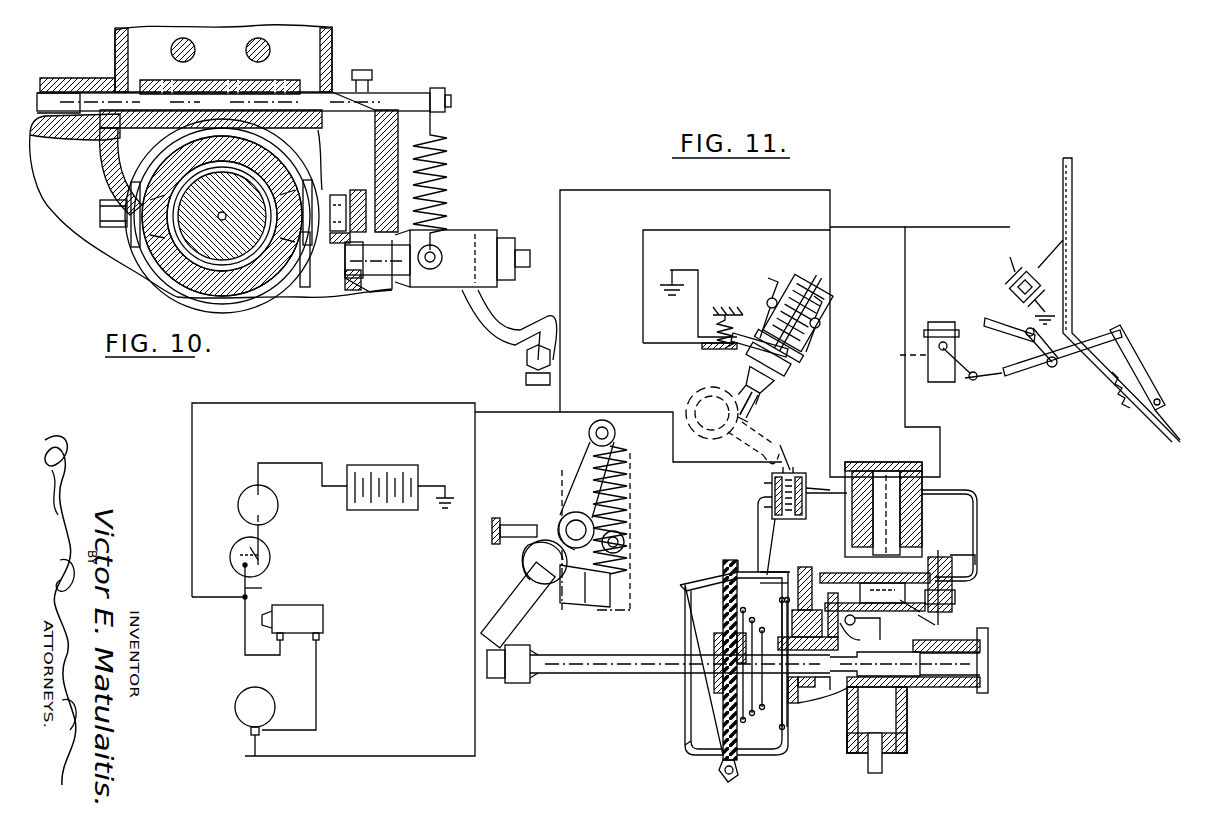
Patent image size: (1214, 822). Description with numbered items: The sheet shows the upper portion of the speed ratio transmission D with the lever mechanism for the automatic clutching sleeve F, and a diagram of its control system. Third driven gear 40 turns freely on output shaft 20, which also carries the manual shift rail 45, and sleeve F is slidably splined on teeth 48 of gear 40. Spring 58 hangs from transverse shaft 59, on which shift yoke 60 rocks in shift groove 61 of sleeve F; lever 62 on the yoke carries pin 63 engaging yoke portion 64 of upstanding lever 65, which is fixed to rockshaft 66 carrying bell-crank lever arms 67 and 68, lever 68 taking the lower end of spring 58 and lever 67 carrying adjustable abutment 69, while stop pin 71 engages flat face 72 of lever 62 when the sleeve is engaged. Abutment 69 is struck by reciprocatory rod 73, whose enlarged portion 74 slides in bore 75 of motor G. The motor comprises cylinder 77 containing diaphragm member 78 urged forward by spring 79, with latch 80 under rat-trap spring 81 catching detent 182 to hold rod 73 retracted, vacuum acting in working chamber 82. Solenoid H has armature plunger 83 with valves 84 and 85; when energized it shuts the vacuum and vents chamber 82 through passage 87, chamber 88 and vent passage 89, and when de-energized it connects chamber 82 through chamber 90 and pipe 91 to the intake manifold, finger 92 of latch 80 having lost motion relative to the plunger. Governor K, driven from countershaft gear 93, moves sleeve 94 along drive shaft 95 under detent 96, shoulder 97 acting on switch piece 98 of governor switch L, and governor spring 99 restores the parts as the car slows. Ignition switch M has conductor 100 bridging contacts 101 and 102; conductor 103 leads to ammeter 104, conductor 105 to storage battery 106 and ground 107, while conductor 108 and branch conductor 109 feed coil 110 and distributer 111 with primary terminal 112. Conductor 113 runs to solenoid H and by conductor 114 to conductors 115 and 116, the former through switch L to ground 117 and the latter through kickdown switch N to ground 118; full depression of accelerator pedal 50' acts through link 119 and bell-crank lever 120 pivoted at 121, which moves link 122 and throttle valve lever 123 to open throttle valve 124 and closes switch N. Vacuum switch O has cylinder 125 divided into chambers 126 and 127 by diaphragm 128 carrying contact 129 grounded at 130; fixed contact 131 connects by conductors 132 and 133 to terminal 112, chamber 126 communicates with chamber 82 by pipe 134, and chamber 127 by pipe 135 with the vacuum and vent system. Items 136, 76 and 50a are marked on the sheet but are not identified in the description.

In FIG. 10, the speed ratio transmission D is at (112, 50).
In FIG. 10, the shift rail 45 is at (262, 50).
In FIG. 10, the transverse shaft 59 is at (396, 92).
In FIG. 11, the transverse shaft 59 is at (616, 431).
In FIG. 10, the teeth 48 is at (228, 142).
In FIG. 10, the shift yoke 60 is at (122, 156).
In FIG. 11, the shift yoke 60 is at (588, 434).
In FIG. 10, the spring 58 is at (452, 149).
In FIG. 11, the spring 58 is at (620, 472).
In FIG. 10, the forwardly extending lever 62 is at (321, 175).
In FIG. 11, the forwardly extending lever 62 is at (583, 495).
In FIG. 10, the lateral pin 63 is at (342, 208).
In FIG. 11, the lateral pin 63 is at (563, 518).
In FIG. 10, the stop pin 71 is at (311, 259).
In FIG. 11, the stop pin 71 is at (512, 525).
In FIG. 10, the upstanding lever 65 is at (342, 282).
In FIG. 11, the upstanding lever 65 is at (522, 552).
In FIG. 10, the third driven gear 40 is at (176, 234).
In FIG. 10, the shift groove 61 is at (190, 252).
In FIG. 10, the automatic clutching sleeve F is at (198, 272).
In FIG. 11, the automatic clutching sleeve F is at (636, 560).
In FIG. 10, the output shaft 20 is at (208, 292).
In FIG. 10, the rockshaft 66 is at (398, 292).
In FIG. 11, the rockshaft 66 is at (575, 598).
In FIG. 10, the lever arm 67 is at (438, 286).
In FIG. 11, the lever arm 67 is at (512, 600).
In FIG. 10, the lever arm 68 is at (508, 344).
In FIG. 11, the lever arm 68 is at (592, 598).
In FIG. 11, the second conductor 113 is at (192, 508).
In FIG. 11, the conductor 133 is at (474, 697).
In FIG. 11, the ammeter 104 is at (242, 497).
In FIG. 11, the conductor 105 is at (298, 445).
In FIG. 11, the storage battery 106 is at (380, 472).
In FIG. 11, the ground 107 is at (445, 515).
In FIG. 11, the ignition switch M is at (240, 545).
In FIG. 11, the conductor 103 is at (265, 528).
In FIG. 11, the contact 101 is at (262, 552).
In FIG. 11, the conductor 100 is at (262, 565).
In FIG. 11, the contact 102 is at (240, 568).
In FIG. 11, the conductor 108 is at (262, 588).
In FIG. 11, the conductor 109 is at (245, 633).
In FIG. 11, the coil 110 is at (322, 612).
In FIG. 11, the distributer 111 is at (245, 690).
In FIG. 11, the primary terminal 112 is at (248, 735).
In FIG. 11, the conductor 115 is at (850, 228).
In FIG. 11, the conductor 114 is at (904, 392).
In FIG. 11, the ground 117 is at (672, 290).
In FIG. 11, the governor K is at (782, 292).
In FIG. 11, the governor spring 99 is at (817, 303).
In FIG. 11, the swinging switch piece 98 is at (742, 342).
In FIG. 11, the governor switch L is at (752, 350).
In FIG. 11, the sleeve 94 is at (785, 347).
In FIG. 11, the shoulder 97 is at (782, 370).
In FIG. 11, the detent 96 is at (765, 390).
In FIG. 11, the drive shaft 95 is at (760, 410).
In FIG. 11, the countershaft gear 93 is at (700, 412).
In FIG. 11, the resilient diaphragm 128 is at (793, 468).
In FIG. 11, the vacuum switch O is at (791, 475).
In FIG. 11, the chamber 127 is at (795, 486).
In FIG. 11, the conductor 136 is at (838, 470).
In FIG. 11, the conductor 132 is at (773, 476).
In FIG. 11, the fixed switch contact 131 is at (766, 497).
In FIG. 11, the chamber 126 is at (768, 515).
In FIG. 11, the pipe 134 is at (740, 548).
In FIG. 11, the cylinder 125 is at (812, 520).
In FIG. 11, the switch contact 129 is at (805, 525).
In FIG. 11, the ground 130 is at (840, 532).
In FIG. 11, the vent passage 89 is at (870, 505).
In FIG. 11, the solenoid H is at (935, 488).
In FIG. 11, the armature plunger 83 is at (918, 498).
In FIG. 11, the valve 84 is at (918, 520).
In FIG. 11, the pipe 135 is at (980, 524).
In FIG. 11, the valve 85 is at (955, 572).
In FIG. 11, the inwardly bent finger 92 is at (955, 595).
In FIG. 11, the chamber 90 is at (955, 618).
In FIG. 11, the chamber 88 is at (875, 595).
In FIG. 11, the rat-trap spring 81 is at (850, 612).
In FIG. 11, the passage 87 is at (800, 630).
In FIG. 11, the pressure fluid operated motor G is at (711, 663).
In FIG. 11, the differential fluid pressure operated member 78 is at (720, 752).
In FIG. 11, the spring 79 is at (760, 740).
In FIG. 11, the cylinder 77 is at (760, 755).
In FIG. 11, the working chamber 82 is at (730, 770).
In FIG. 11, the chamber 76 is at (764, 597).
In FIG. 11, the enlarged central portion 74 is at (815, 675).
In FIG. 11, the bore 75 is at (822, 672).
In FIG. 11, the latch 80 is at (855, 660).
In FIG. 11, the detent 182 is at (917, 690).
In FIG. 11, the pipe 91 is at (885, 762).
In FIG. 11, the reciprocatory rod 73 is at (596, 665).
In FIG. 11, the adjustable abutment 69 is at (540, 680).
In FIG. 11, the yoke portion 64 is at (574, 522).
In FIG. 11, the forward flat face 72 is at (560, 530).
In FIG. 11, the kickdown switch N is at (1022, 270).
In FIG. 11, the conductor 116 is at (997, 262).
In FIG. 11, the ground 118 is at (1050, 312).
In FIG. 11, the bell-crank lever 120 is at (992, 320).
In FIG. 11, the pivot 121 is at (1028, 340).
In FIG. 11, the link 119 is at (1072, 362).
In FIG. 11, the link 122 is at (1012, 370).
In FIG. 11, the throttle valve lever 123 is at (972, 382).
In FIG. 11, the throttle valve 124 is at (950, 352).
In FIG. 11, the accelerator pedal 50' is at (1145, 381).
In FIG. 11, the spring 50a is at (1140, 368).